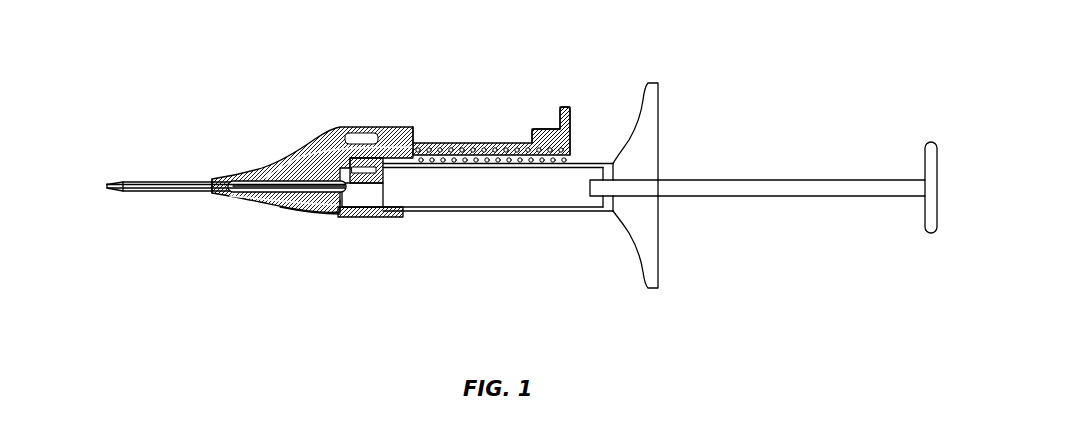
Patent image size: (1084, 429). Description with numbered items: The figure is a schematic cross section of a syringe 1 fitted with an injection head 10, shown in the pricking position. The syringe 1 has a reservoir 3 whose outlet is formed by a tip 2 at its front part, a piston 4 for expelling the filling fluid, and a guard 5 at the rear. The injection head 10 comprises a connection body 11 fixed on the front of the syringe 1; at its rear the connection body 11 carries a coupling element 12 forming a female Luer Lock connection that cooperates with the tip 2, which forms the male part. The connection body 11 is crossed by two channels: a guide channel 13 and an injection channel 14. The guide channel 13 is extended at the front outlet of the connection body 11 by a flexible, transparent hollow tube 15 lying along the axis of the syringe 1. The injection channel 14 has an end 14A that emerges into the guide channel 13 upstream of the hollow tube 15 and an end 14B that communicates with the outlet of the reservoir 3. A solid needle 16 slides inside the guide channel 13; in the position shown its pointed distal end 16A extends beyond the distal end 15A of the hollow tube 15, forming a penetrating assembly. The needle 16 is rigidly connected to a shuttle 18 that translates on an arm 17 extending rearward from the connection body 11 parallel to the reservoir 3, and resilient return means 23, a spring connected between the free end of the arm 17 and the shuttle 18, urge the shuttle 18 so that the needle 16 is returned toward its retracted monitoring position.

The syringe 1 is at (717, 112).
The tip 2 is at (384, 200).
The reservoir 3 is at (517, 211).
The piston 4 is at (933, 135).
The guard 5 is at (667, 249).
The injection head 10 is at (297, 79).
The connection body 11 is at (312, 228).
The coupling element 12 is at (365, 154).
The guide channel 13 is at (269, 156).
The injection channel 14 is at (275, 207).
The end of injection channel 14A is at (214, 209).
The end of injection channel 14B is at (340, 211).
The hollow tube 15 is at (174, 170).
The distal end of hollow tube 15A is at (126, 170).
The needle 16 is at (148, 203).
The distal end of needle 16A is at (96, 171).
The arm 17 is at (525, 124).
The shuttle 18 is at (416, 120).
The resilient return means 23 is at (473, 141).